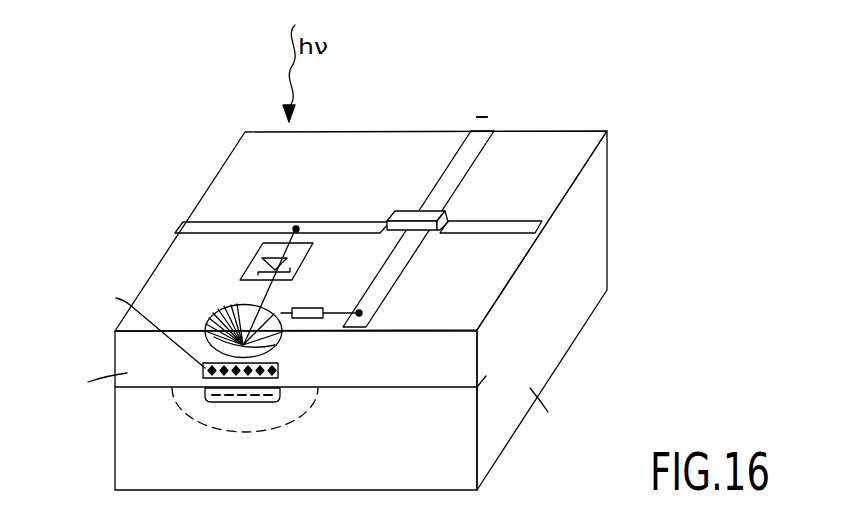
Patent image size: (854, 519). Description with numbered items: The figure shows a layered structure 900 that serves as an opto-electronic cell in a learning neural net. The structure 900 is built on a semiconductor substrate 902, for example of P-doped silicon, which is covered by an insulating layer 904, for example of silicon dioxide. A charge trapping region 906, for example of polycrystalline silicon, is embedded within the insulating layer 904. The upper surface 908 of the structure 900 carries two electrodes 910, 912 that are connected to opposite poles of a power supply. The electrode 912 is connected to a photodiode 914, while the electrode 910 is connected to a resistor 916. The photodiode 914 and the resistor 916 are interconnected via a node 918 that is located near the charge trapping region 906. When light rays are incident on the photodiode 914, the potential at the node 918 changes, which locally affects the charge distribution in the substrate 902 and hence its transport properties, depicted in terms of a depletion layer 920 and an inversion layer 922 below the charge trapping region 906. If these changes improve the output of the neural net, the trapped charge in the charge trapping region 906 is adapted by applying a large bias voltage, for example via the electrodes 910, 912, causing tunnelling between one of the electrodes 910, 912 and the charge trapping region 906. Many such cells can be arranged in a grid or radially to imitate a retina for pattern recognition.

The layered structure 900 is at (719, 342).
The semiconductor substrate 902 is at (562, 331).
The insulating layer 904 is at (596, 173).
The charge trapping region 906 is at (278, 370).
The upper surface 908 is at (372, 157).
The electrode 910 is at (478, 142).
The electrode 912 is at (507, 227).
The photodiode 914 is at (262, 258).
The resistor 916 is at (313, 308).
The node 918 is at (280, 342).
The depletion layer 920 is at (197, 423).
The inversion layer 922 is at (205, 395).